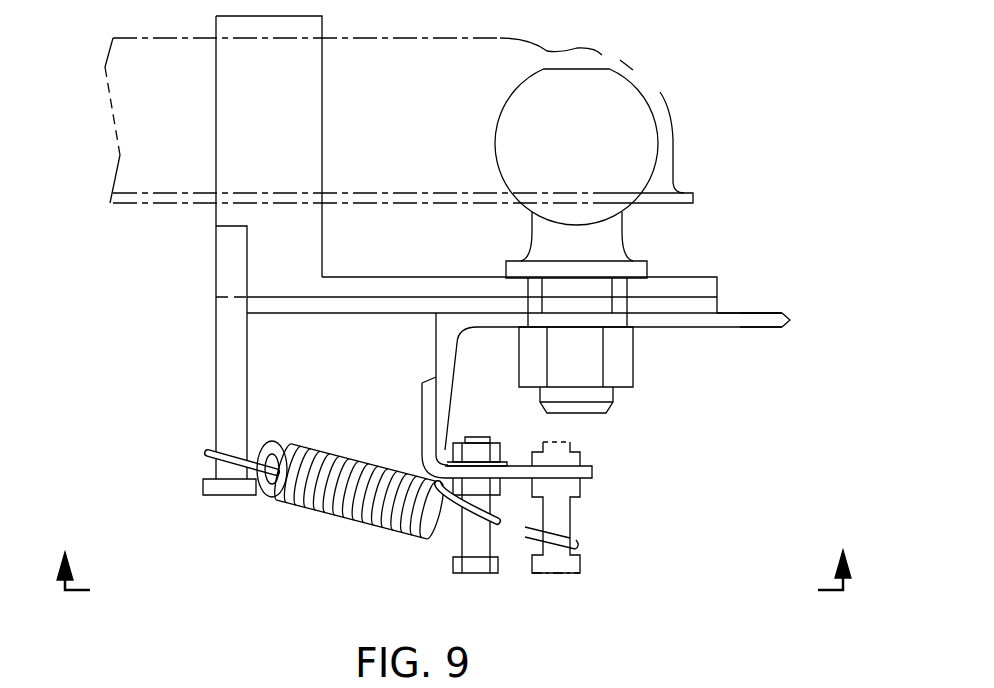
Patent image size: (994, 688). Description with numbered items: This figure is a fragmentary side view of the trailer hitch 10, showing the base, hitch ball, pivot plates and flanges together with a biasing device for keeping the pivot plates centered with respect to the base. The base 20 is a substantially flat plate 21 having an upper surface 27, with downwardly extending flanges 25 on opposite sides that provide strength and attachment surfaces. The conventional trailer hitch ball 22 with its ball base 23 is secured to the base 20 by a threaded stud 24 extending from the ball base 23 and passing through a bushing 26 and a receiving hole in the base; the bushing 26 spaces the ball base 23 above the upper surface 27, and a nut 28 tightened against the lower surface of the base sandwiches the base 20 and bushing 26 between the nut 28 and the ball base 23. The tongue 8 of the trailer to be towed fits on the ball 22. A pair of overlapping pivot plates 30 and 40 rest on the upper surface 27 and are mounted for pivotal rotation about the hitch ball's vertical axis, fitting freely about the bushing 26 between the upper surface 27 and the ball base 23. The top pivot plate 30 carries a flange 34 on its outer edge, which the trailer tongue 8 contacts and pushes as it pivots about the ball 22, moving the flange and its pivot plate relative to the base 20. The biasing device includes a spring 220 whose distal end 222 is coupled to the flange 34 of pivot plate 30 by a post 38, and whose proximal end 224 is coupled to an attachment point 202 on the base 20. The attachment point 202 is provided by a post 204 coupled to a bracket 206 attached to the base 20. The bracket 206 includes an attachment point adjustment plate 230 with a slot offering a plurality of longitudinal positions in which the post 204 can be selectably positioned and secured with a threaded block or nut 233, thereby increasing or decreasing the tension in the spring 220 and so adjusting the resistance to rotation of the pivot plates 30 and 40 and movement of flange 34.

The tongue 8 is at (578, 48).
The trailer hitch ball 22 is at (623, 98).
The flange 34 is at (240, 122).
The post 38 is at (232, 360).
The top pivot plate 30 is at (368, 285).
The bottom pivot plate 40 is at (428, 302).
The ball base 23 is at (533, 270).
The bushing 26 is at (617, 306).
The flat plate 21 is at (752, 325).
The upper surface 27 is at (735, 311).
The base 20 is at (770, 318).
The nut 28 is at (627, 358).
The threaded stud 24 is at (608, 397).
The downwardly extending flanges 25 is at (440, 355).
The bracket 206 is at (430, 410).
The attachment point adjustment plate 230 is at (593, 471).
The attachment point 202 is at (545, 440).
The threaded block or nut 233 is at (462, 452).
The post 204 is at (477, 568).
The distal end 222 is at (206, 453).
The spring 220 is at (313, 507).
The proximal end 224 is at (455, 515).
The trailer hitch 10 is at (456, 548).